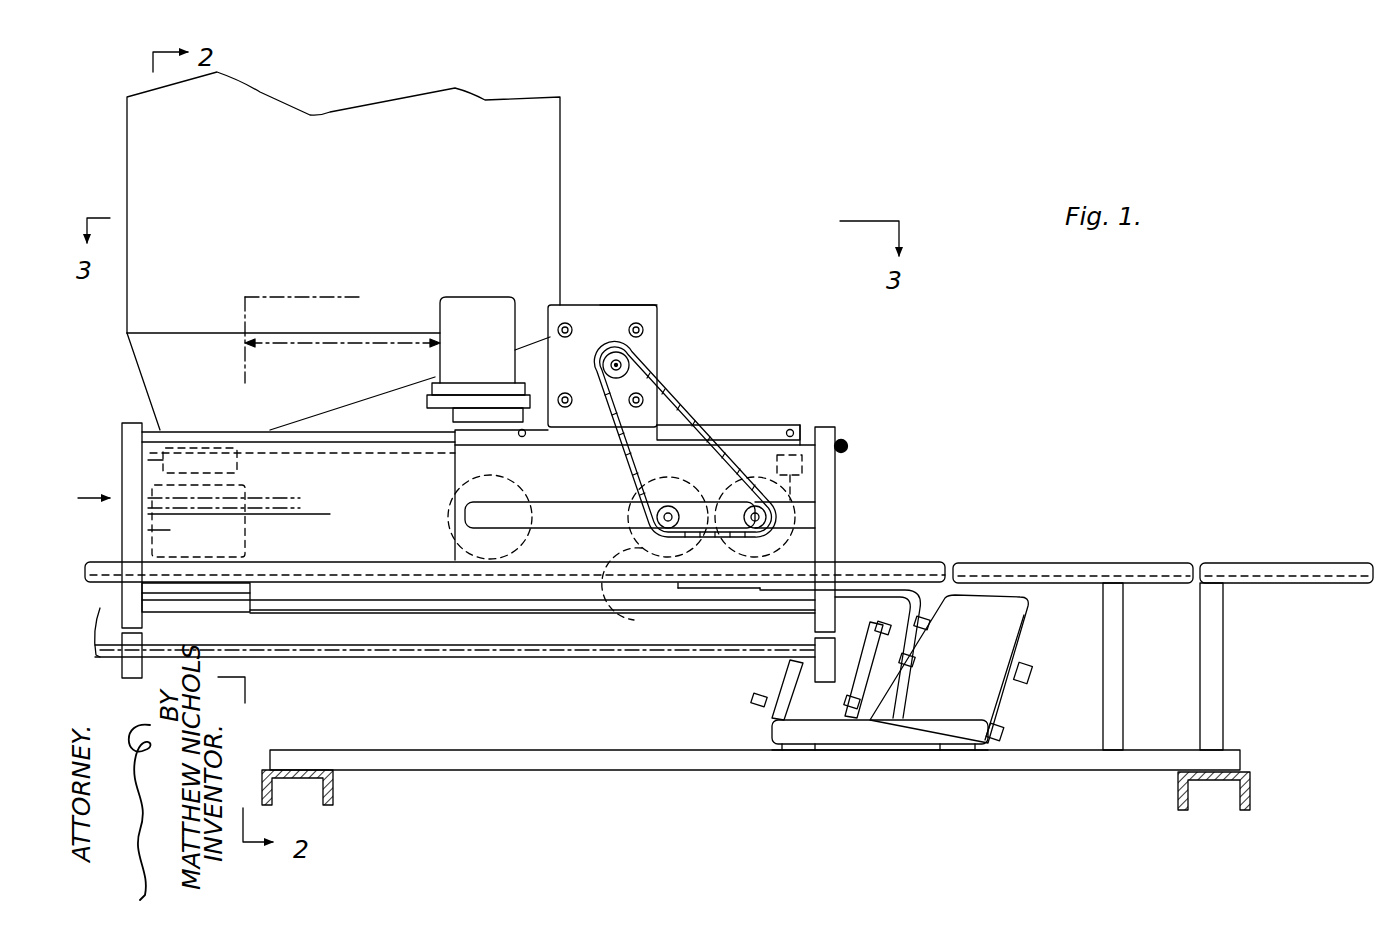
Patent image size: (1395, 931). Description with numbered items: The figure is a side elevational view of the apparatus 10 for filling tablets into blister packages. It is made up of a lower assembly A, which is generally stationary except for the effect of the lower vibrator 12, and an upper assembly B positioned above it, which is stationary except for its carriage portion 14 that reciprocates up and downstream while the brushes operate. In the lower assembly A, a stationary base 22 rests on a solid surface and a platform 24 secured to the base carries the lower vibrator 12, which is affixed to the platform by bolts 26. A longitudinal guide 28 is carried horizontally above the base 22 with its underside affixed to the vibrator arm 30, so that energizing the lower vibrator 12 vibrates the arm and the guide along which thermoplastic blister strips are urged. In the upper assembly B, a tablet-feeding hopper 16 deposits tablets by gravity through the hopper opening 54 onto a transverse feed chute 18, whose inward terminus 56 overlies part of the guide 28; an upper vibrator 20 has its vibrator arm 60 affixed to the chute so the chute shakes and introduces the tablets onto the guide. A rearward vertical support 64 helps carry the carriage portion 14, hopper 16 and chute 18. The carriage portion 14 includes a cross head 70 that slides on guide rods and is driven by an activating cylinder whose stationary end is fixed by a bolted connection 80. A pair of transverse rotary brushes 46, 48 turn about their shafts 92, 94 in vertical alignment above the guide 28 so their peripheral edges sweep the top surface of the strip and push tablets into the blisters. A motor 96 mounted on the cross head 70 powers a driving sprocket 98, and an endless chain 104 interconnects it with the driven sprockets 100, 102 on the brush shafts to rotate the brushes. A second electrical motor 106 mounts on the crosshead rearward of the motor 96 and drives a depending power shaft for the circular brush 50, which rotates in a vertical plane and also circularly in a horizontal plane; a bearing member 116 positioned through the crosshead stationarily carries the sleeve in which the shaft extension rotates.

The apparatus for filling tablets into blister packages 10 is at (846, 483).
The lower vibrator 12 is at (1020, 617).
The carriage portion 14 is at (663, 331).
The tablet-feeding hopper 16 is at (553, 181).
The transverse feed chute 18 is at (160, 461).
The upper vibrator 20 is at (160, 529).
The stationary base 22 is at (333, 790).
The platform 24 is at (505, 748).
The bolts 26 is at (838, 718).
The longitudinal guide 28 is at (918, 568).
The vibrator arm 30 is at (765, 598).
The transverse rotary brush 46 is at (822, 549).
The transverse rotary brush 48 is at (618, 596).
The circular brush 50 is at (452, 543).
The hopper opening 54 is at (212, 432).
The inward terminus 56 is at (238, 463).
The vibrator arm 60 is at (245, 486).
The rearward vertical support 64 is at (128, 453).
The cross head 70 is at (771, 423).
The bolted connection 80 is at (849, 445).
The brush shaft 92 is at (745, 500).
The brush shaft 94 is at (640, 500).
The motor 96 is at (648, 322).
The driving sprocket 98 is at (632, 366).
The driven sprocket 100 is at (778, 516).
The driven sprocket 102 is at (660, 527).
The endless chain 104 is at (670, 391).
The second electrical motor 106 is at (483, 307).
The bearing member 116 is at (449, 478).
The lower assembly A is at (656, 792).
The upper assembly B is at (832, 420).